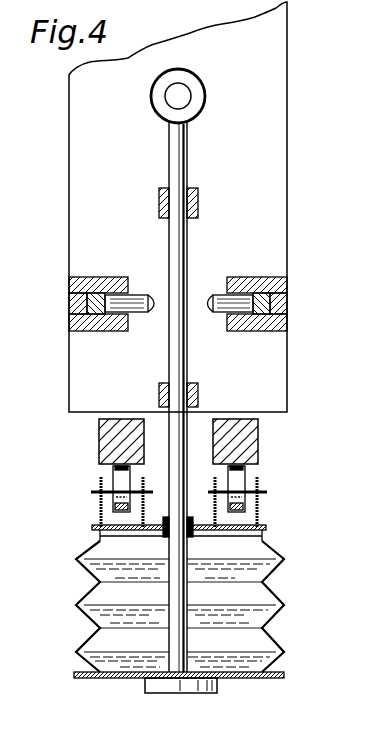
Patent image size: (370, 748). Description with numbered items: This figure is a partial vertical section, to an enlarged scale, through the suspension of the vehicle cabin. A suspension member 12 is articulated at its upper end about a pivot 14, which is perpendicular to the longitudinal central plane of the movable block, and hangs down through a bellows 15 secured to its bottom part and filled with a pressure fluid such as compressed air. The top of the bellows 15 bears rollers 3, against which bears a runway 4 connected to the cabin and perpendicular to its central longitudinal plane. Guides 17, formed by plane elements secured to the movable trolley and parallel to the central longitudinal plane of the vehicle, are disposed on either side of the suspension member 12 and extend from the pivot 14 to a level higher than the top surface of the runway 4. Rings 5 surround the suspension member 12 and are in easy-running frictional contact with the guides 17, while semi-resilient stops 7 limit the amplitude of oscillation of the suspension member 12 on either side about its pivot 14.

The rollers 3 is at (123, 490).
The runway 4 is at (97, 437).
The rings 5 is at (158, 206).
The semi-resilient stops 7 is at (70, 300).
The suspension member 12 is at (168, 338).
The pivot 14 is at (173, 95).
The bellows 15 is at (105, 568).
The guides 17 is at (68, 236).